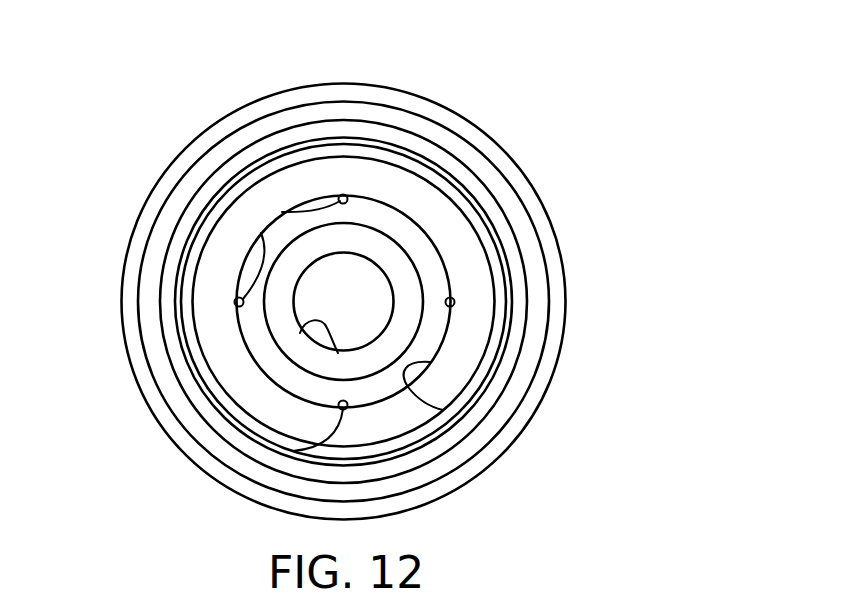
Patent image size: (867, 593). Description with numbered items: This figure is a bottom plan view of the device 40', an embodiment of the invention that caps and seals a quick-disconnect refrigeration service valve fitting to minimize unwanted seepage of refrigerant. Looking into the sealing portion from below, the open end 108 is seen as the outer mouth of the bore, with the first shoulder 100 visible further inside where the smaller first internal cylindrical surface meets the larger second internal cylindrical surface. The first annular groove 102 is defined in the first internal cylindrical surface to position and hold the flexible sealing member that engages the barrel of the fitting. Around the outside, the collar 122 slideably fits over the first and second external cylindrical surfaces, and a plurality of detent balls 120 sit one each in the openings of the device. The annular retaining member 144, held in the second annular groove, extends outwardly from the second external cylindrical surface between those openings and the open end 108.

The device 40' is at (368, 280).
The first shoulder 100 is at (372, 242).
The first annular groove 102 is at (220, 422).
The open end 108 is at (443, 410).
The detent balls 120 is at (283, 212).
The collar 122 is at (472, 163).
The annular retaining member 144 is at (505, 353).